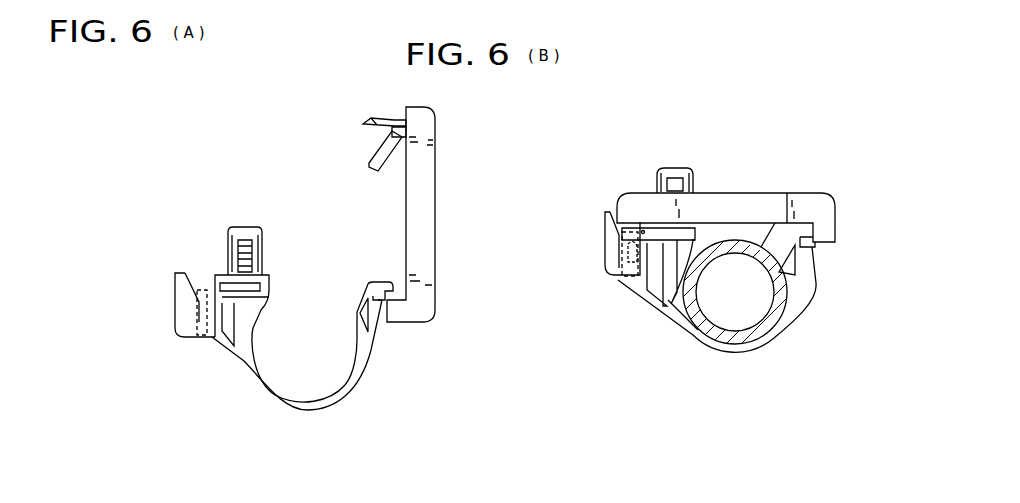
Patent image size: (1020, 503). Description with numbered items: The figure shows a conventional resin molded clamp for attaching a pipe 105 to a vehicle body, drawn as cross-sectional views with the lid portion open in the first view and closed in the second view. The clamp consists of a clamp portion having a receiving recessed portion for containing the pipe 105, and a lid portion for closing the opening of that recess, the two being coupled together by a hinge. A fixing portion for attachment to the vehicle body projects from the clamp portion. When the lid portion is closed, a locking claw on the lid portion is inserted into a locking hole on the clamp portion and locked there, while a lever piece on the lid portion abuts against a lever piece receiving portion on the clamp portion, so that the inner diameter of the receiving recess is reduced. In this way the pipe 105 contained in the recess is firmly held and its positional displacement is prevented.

The pipe 105 is at (787, 303).